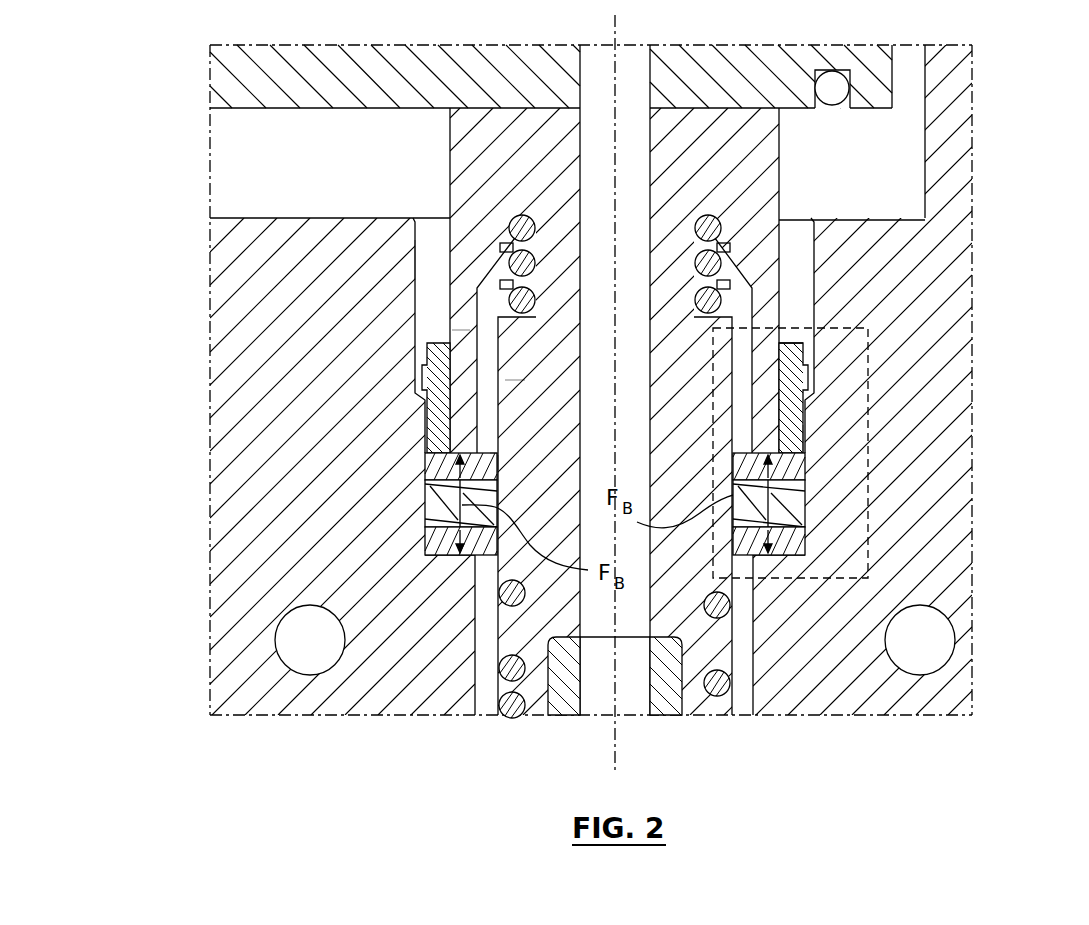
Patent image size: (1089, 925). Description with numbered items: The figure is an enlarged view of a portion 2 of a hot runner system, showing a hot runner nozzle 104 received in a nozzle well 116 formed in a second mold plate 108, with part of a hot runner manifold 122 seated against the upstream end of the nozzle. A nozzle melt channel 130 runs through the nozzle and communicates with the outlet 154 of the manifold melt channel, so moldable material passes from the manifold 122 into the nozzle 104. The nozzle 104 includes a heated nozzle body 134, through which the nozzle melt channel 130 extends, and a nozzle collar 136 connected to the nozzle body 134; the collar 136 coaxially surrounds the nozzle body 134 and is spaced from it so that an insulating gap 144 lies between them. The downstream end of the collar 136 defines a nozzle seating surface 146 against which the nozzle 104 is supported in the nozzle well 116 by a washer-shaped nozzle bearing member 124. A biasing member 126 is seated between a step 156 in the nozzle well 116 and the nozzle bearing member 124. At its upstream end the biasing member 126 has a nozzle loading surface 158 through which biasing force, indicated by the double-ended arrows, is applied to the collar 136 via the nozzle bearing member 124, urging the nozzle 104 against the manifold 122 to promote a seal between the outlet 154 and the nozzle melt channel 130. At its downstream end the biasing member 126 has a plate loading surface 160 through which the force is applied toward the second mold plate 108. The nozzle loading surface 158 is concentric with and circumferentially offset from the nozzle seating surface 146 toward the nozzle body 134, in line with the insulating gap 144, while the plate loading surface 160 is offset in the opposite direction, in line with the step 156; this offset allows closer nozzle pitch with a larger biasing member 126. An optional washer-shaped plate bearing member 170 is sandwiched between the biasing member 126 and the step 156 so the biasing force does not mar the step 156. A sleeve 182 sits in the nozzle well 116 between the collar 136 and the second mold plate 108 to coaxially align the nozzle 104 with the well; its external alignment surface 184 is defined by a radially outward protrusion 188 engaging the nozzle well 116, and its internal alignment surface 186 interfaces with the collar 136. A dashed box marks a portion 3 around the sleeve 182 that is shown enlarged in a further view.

The hot runner manifold 122 is at (214, 72).
The outlet 154 is at (642, 92).
The nozzle melt channel 130 is at (642, 183).
The nozzle well 116 is at (415, 263).
The hot runner nozzle 104 is at (428, 293).
The nozzle collar 136 is at (463, 345).
The portion 2 is at (210, 318).
The insulating gap 144 is at (487, 373).
The heated nozzle body 134 is at (517, 392).
The nozzle bearing member 124 is at (425, 470).
The biasing member 126 is at (440, 502).
The plate loading surface 160 is at (422, 538).
The step 156 is at (425, 545).
The nozzle seating surface 146 is at (497, 462).
The nozzle loading surface 158 is at (498, 463).
The internal alignment surface 186 is at (778, 360).
The sleeve 182 is at (803, 367).
The external alignment surface 184 is at (806, 433).
The protrusion 188 is at (806, 451).
The portion 3 is at (868, 480).
The plate bearing member 170 is at (800, 543).
The second mold plate 108 is at (957, 565).